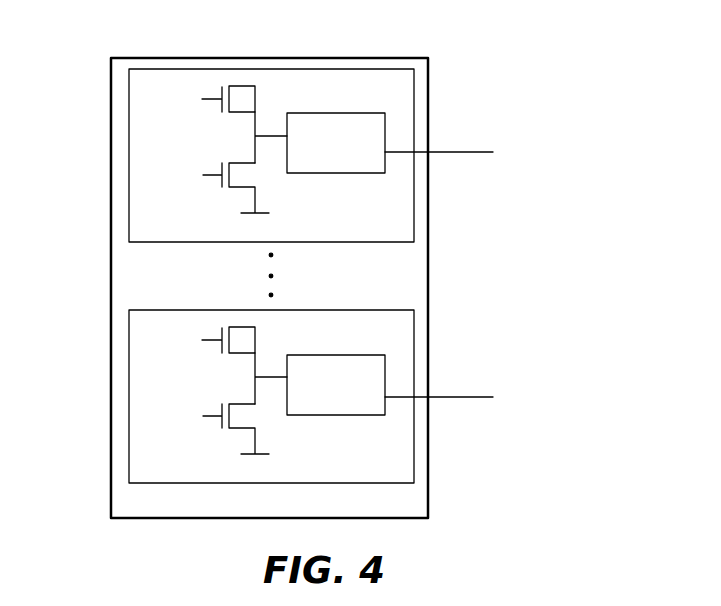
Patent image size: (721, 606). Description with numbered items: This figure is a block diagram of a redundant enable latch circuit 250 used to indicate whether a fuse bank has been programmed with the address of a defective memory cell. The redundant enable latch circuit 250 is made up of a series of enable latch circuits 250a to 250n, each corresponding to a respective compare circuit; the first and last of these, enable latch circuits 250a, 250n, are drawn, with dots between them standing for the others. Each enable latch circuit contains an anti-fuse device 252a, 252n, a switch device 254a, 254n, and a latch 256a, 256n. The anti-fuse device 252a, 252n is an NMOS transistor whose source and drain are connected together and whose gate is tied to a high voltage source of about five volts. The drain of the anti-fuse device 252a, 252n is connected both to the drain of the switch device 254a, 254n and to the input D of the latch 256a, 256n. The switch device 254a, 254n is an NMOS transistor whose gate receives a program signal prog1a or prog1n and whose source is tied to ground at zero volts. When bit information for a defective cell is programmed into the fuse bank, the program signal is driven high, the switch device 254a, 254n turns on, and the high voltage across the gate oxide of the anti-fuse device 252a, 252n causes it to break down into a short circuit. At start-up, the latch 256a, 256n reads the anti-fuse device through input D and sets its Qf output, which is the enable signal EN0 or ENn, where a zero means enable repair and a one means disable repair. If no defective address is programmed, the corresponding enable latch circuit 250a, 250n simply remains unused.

The redundant enable latch circuit 250 is at (326, 273).
The enable latch circuit 250a is at (330, 135).
The enable latch circuit 250n is at (326, 379).
The anti-fuse device 252a is at (238, 67).
The anti-fuse device 252n is at (238, 313).
The switch device 254a is at (217, 165).
The switch device 254n is at (214, 405).
The latch 256a is at (380, 112).
The latch 256n is at (378, 353).